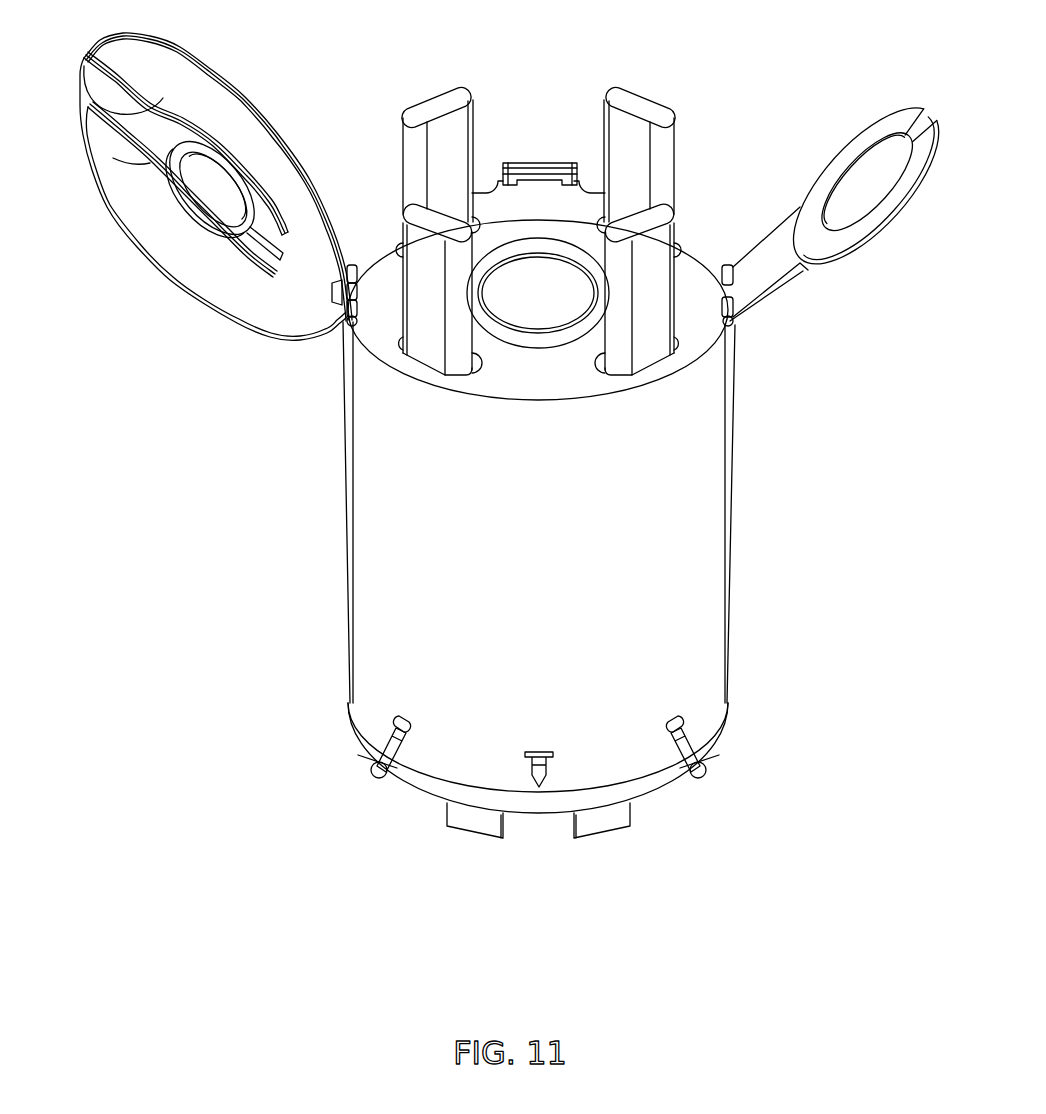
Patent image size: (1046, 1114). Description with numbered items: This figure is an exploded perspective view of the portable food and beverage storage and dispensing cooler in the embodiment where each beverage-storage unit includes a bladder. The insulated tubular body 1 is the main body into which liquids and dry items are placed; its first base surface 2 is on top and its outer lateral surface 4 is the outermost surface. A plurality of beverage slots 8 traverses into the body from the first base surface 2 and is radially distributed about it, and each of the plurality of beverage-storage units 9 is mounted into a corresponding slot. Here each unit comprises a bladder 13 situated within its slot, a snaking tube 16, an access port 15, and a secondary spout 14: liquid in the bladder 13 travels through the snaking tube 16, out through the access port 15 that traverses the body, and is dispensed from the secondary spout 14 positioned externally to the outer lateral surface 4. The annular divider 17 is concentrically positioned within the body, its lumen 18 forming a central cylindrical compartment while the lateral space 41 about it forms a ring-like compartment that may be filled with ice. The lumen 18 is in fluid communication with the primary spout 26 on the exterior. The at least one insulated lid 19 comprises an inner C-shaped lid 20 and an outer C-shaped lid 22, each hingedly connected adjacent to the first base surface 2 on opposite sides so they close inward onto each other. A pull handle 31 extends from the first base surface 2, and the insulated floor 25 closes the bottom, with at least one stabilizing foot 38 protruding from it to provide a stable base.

The insulated tubular body 1 is at (704, 236).
The first base surface 2 is at (367, 303).
The outer lateral surface 4 is at (511, 580).
The plurality of beverage slots 8 is at (478, 225).
The plurality of beverage-storage units 9 is at (482, 110).
The bladder 13 is at (412, 141).
The secondary spout 14 is at (370, 777).
The access port 15 is at (398, 720).
The snaking tube 16 is at (405, 733).
The annular divider 17 is at (548, 262).
The lumen 18 is at (501, 300).
The at least one insulated lid 19 is at (516, 174).
The inner C-shaped lid 20 is at (893, 117).
The outer C-shaped lid 22 is at (178, 45).
The insulated floor 25 is at (722, 723).
The primary spout 26 is at (552, 766).
The pull handle 31 is at (533, 165).
The at least one stabilizing foot 38 is at (463, 822).
The lateral space 41 is at (562, 344).